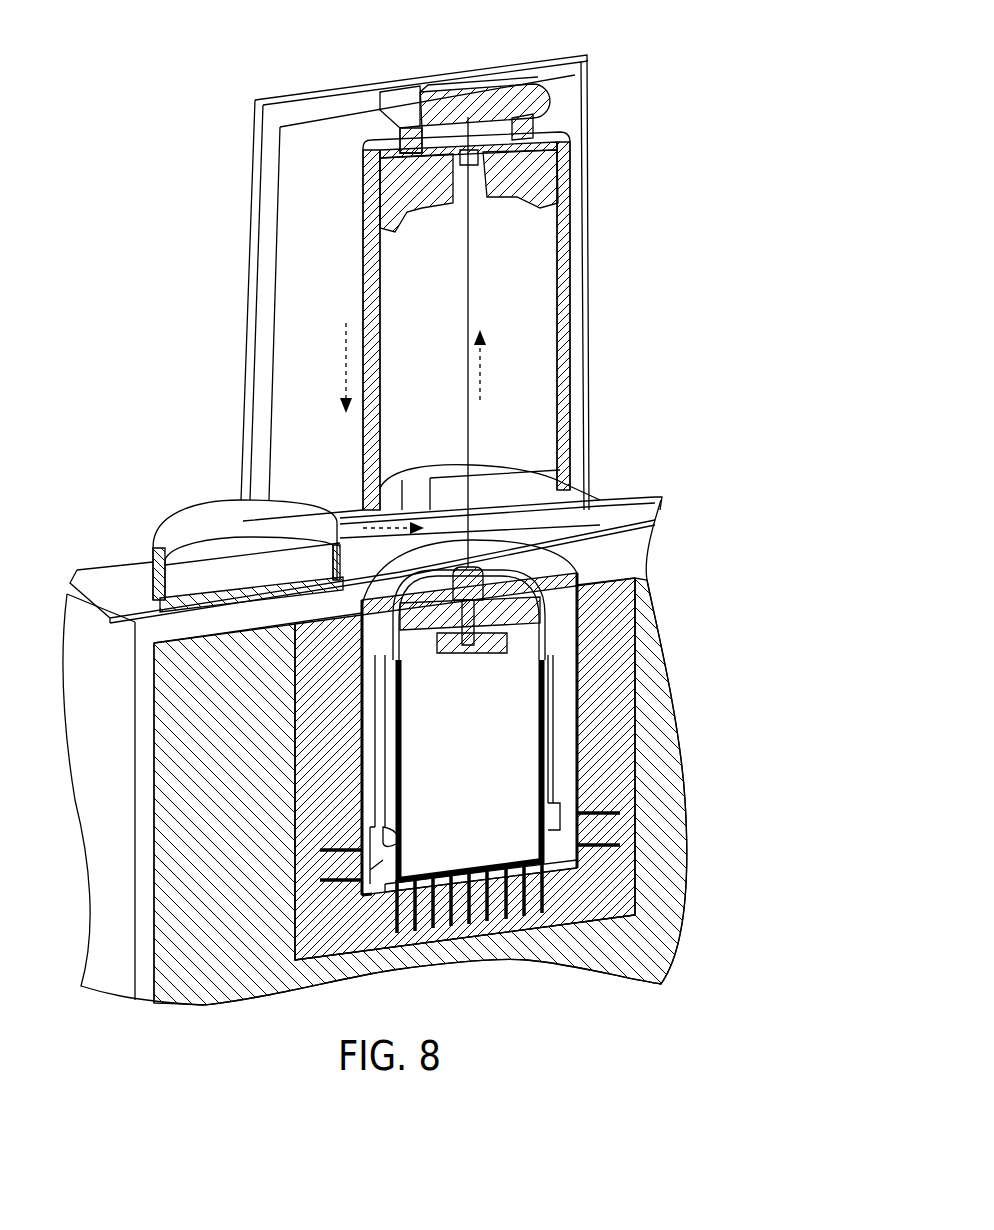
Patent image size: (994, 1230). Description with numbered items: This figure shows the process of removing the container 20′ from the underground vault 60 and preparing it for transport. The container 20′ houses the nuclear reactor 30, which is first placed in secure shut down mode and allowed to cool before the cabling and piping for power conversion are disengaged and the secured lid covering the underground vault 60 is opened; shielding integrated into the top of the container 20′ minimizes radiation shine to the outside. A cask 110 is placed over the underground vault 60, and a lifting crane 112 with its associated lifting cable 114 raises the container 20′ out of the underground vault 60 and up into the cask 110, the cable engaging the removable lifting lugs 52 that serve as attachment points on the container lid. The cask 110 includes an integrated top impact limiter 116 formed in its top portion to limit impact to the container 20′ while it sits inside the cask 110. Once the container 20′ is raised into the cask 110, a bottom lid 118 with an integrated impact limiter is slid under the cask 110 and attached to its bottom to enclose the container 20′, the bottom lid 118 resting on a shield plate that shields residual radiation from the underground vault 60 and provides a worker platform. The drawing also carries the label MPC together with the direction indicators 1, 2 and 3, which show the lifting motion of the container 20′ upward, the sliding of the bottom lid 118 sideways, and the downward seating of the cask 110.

The cask 110 is at (574, 258).
The lifting crane 112 is at (500, 95).
The lifting cable 114 is at (470, 321).
The integrated top impact limiter 116 is at (538, 180).
The bottom lid 118 is at (138, 532).
The upward direction 1 is at (481, 386).
The lateral direction 2 is at (352, 504).
The downward direction 3 is at (343, 368).
The removable lifting lugs 52 is at (470, 622).
The container 20′ is at (572, 688).
The nuclear reactor 30 is at (512, 762).
The underground vault 60 is at (647, 768).
The multi-purpose canister liner MPC is at (389, 748).